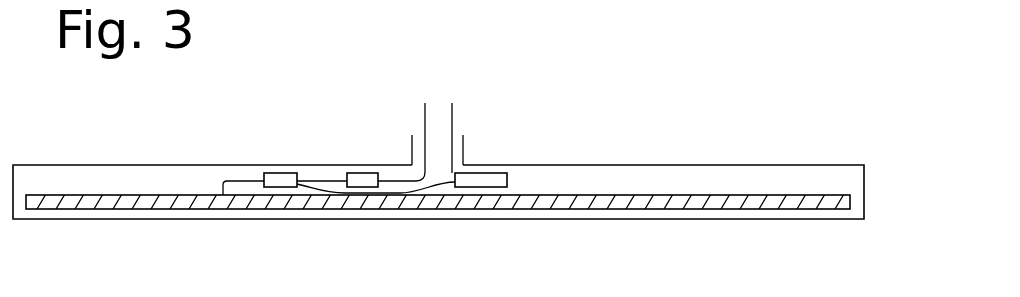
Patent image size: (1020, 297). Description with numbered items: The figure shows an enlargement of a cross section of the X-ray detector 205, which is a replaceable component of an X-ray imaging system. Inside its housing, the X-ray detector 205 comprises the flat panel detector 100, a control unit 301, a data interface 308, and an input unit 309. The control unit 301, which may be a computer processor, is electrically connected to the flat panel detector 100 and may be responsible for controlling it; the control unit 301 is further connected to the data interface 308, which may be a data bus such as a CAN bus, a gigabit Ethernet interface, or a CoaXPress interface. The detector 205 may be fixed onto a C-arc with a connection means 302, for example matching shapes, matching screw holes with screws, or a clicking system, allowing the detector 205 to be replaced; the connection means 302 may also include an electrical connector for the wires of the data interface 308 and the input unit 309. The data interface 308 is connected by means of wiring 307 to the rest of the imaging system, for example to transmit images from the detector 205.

The flat panel detector 100 is at (815, 202).
The X-ray detector 205 is at (753, 165).
The control unit 301 is at (277, 180).
The connection means 302 is at (464, 152).
The wiring 307 is at (425, 123).
The data interface 308 is at (360, 180).
The input unit 309 is at (485, 178).